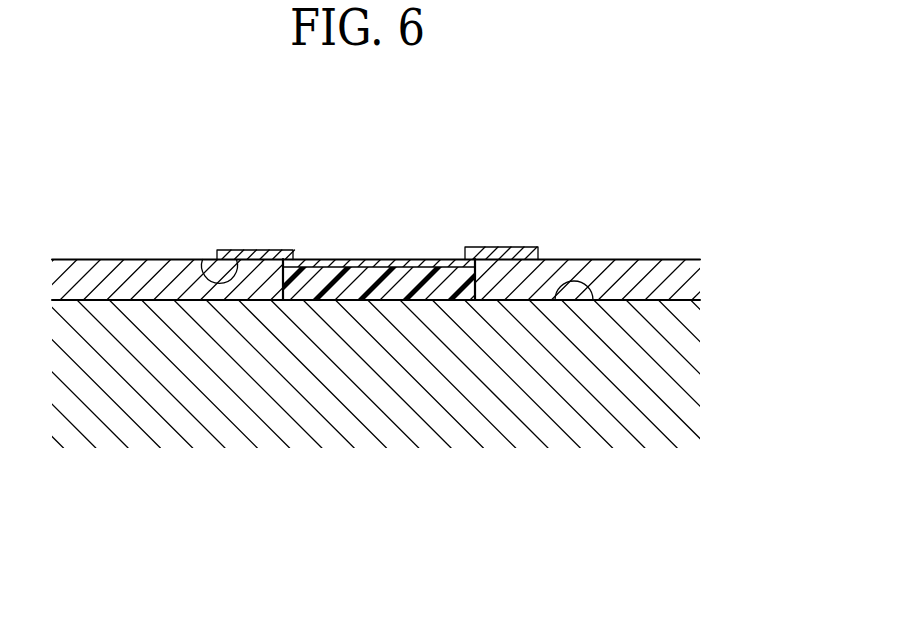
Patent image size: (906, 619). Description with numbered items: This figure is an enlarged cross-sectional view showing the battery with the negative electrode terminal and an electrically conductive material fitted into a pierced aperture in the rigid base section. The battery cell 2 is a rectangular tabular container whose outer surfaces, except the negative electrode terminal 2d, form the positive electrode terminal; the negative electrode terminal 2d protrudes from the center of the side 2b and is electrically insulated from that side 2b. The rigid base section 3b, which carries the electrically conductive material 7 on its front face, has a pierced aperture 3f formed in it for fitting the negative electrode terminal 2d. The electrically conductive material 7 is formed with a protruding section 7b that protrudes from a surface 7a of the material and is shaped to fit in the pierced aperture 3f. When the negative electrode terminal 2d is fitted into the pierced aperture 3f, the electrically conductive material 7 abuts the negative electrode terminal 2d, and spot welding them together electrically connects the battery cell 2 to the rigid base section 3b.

The battery cell 2 is at (693, 367).
The side 2b is at (592, 300).
The negative electrode terminal 2d is at (408, 280).
The rigid base section 3b is at (130, 267).
The pierced aperture 3f is at (285, 289).
The electrically conductive material 7 is at (510, 248).
The surface 7a is at (203, 260).
The protruding section 7b is at (433, 260).